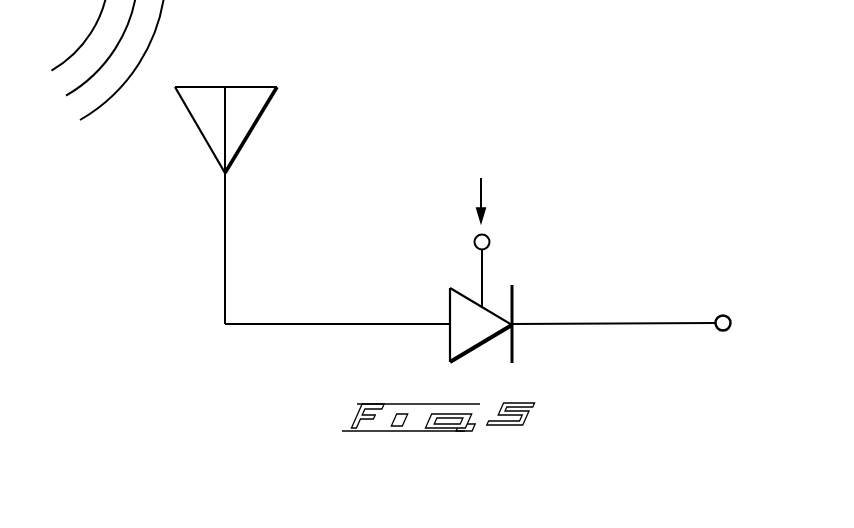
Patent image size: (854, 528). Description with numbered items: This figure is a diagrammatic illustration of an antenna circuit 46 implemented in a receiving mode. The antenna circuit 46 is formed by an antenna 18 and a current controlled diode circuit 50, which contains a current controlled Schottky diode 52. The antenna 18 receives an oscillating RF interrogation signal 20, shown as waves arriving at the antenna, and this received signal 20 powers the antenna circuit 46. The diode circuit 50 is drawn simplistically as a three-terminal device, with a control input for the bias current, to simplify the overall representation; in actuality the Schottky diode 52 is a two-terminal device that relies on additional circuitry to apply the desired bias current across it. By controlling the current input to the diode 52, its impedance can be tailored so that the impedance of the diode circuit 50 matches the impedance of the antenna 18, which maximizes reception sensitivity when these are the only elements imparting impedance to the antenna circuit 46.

The antenna 18 is at (250, 132).
The interrogation signal 20 is at (100, 110).
The antenna circuit 46 is at (632, 105).
The current controlled diode circuit 50 is at (555, 210).
The current controlled Schottky diode 52 is at (513, 345).